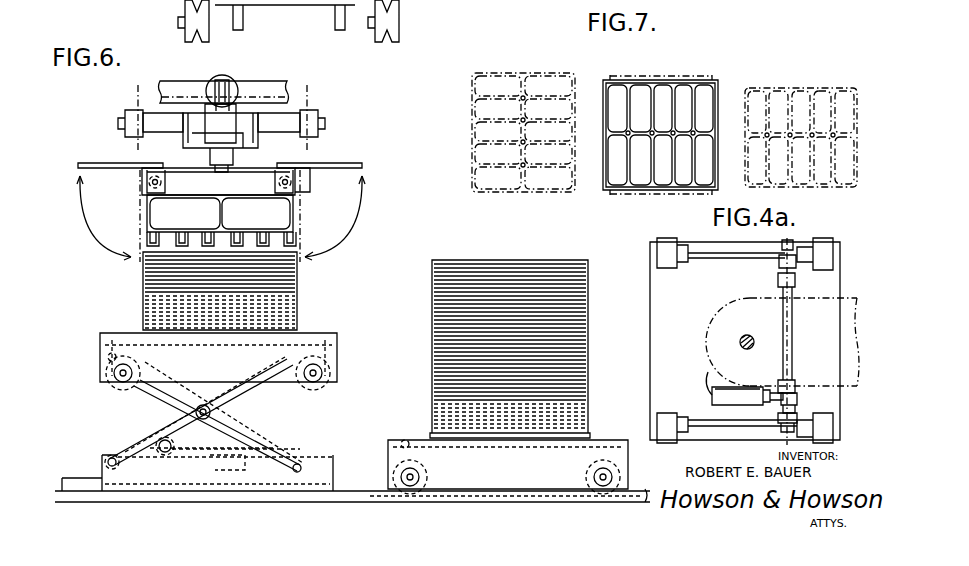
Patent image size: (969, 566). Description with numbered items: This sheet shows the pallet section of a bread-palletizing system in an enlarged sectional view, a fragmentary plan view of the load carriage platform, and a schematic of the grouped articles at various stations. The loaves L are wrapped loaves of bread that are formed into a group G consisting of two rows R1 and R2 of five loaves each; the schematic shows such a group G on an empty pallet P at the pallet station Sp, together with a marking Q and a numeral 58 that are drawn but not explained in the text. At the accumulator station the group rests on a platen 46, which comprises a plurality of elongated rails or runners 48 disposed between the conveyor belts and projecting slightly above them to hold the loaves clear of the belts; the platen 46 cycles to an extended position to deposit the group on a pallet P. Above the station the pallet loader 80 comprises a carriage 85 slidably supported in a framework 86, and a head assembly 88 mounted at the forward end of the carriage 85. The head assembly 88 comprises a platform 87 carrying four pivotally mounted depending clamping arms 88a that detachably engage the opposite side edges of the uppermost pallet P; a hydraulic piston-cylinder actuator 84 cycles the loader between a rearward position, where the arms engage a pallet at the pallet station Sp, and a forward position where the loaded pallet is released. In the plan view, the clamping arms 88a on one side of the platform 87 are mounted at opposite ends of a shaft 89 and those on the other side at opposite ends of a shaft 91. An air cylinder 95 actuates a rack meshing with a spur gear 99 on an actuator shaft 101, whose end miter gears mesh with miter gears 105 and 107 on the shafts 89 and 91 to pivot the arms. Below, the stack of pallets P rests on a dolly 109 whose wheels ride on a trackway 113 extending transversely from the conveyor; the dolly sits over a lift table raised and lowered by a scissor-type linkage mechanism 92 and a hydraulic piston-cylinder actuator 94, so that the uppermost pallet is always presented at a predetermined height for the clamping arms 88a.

In FIG. 6, the platen 46 is at (300, 235).
In FIG. 6, the rails or runners 48 is at (206, 240).
In FIG. 7, the reference numeral fragment 58 is at (811, 6).
In FIG. 4A, the pallet loader 80 is at (709, 313).
In FIG. 6, the piston-cylinder actuator 84 is at (224, 84).
In FIG. 6, the carriage 85 is at (262, 132).
In FIG. 6, the framework 86 is at (310, 108).
In FIG. 6, the platform 87 is at (311, 181).
In FIG. 4A, the platform 87 is at (650, 298).
In FIG. 6, the head assembly 88 is at (183, 146).
In FIG. 6, the clamping arms 88a is at (92, 163).
In FIG. 4A, the clamping arms 88a is at (662, 242).
In FIG. 4A, the shaft 89 is at (706, 422).
In FIG. 4A, the shaft 91 is at (722, 258).
In FIG. 6, the scissor-type linkage mechanism 92 is at (250, 392).
In FIG. 6, the hydraulic piston-cylinder actuator 94 is at (212, 452).
In FIG. 4A, the air cylinder 95 is at (707, 378).
In FIG. 4A, the spur gear 99 is at (797, 400).
In FIG. 4A, the actuator shaft 101 is at (780, 289).
In FIG. 4A, the miter gear 105 is at (780, 418).
In FIG. 6, the miter gear 107 is at (212, 118).
In FIG. 4A, the miter gear 107 is at (786, 244).
In FIG. 6, the dolly 109 is at (108, 357).
In FIG. 6, the trackway 113 is at (350, 490).
In FIG. 6, the loaves L is at (245, 210).
In FIG. 7, the loaves L is at (550, 105).
In FIG. 6, the pallet P is at (143, 284).
In FIG. 7, the pallet P is at (475, 126).
In FIG. 7, the pallet station Sp is at (678, 76).
In FIG. 7, the group G is at (483, 161).
In FIG. 7, the quantity Q is at (654, 109).
In FIG. 7, the first row R1 is at (530, 180).
In FIG. 7, the second row R2 is at (510, 178).